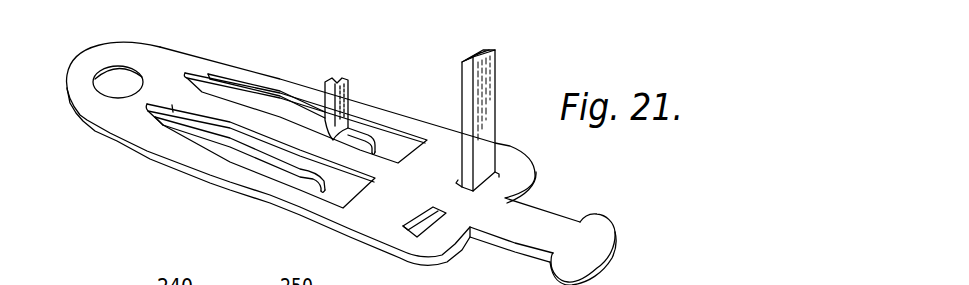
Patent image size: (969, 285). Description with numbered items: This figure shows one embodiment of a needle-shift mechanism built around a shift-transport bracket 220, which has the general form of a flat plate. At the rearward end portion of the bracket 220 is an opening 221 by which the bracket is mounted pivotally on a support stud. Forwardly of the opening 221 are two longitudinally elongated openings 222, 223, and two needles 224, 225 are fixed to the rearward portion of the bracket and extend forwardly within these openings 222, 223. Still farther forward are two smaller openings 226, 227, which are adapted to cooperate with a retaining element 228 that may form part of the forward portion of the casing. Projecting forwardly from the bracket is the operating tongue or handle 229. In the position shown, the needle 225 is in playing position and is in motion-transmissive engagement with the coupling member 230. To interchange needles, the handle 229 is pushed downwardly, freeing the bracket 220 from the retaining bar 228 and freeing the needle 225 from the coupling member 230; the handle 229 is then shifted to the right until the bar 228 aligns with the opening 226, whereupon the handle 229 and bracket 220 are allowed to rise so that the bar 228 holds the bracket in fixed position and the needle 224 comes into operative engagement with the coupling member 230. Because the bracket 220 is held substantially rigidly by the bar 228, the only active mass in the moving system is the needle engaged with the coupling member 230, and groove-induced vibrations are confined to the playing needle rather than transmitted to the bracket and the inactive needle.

The shift-transport bracket 220 is at (373, 108).
The opening 221 is at (124, 75).
The longitudinally elongated opening 222 is at (292, 180).
The longitudinally elongated opening 223 is at (395, 150).
The needle 224 is at (230, 138).
The needle 225 is at (283, 108).
The smaller opening 226 is at (423, 230).
The smaller opening 227 is at (463, 190).
The retaining element 228 is at (485, 100).
The operating tongue or handle 229 is at (596, 237).
The coupling member 230 is at (338, 85).